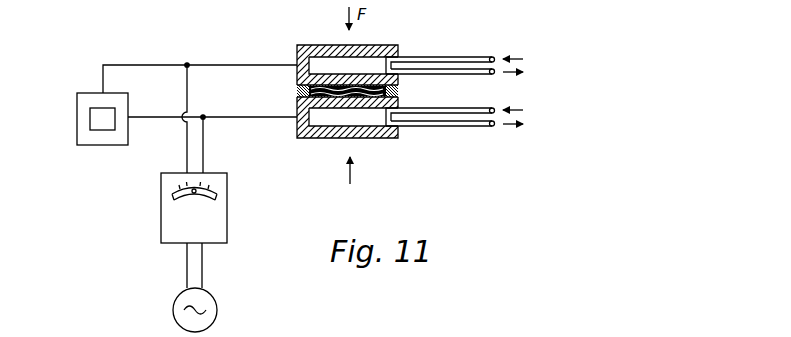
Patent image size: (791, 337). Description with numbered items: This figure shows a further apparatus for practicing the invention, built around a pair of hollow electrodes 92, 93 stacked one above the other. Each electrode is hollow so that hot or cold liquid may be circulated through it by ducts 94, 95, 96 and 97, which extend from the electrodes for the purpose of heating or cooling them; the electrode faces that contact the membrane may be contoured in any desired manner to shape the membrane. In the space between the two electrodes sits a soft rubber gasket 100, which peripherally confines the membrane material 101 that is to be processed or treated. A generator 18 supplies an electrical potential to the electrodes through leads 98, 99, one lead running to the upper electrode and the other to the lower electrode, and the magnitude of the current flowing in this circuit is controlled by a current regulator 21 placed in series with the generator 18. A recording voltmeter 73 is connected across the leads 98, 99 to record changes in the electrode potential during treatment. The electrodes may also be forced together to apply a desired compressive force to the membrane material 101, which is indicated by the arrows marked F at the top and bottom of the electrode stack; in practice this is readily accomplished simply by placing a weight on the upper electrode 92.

The generator 18 is at (173, 311).
The current regulator 21 is at (161, 215).
The recording voltmeter 73 is at (77, 112).
The hollow electrode 92 is at (323, 45).
The hollow electrode 93 is at (330, 138).
The duct 94 is at (470, 57).
The duct 95 is at (460, 74).
The duct 96 is at (446, 108).
The duct 97 is at (470, 126).
The lead 98 is at (205, 65).
The lead 99 is at (232, 117).
The soft rubber gasket 100 is at (297, 92).
The membrane material 101 is at (362, 97).